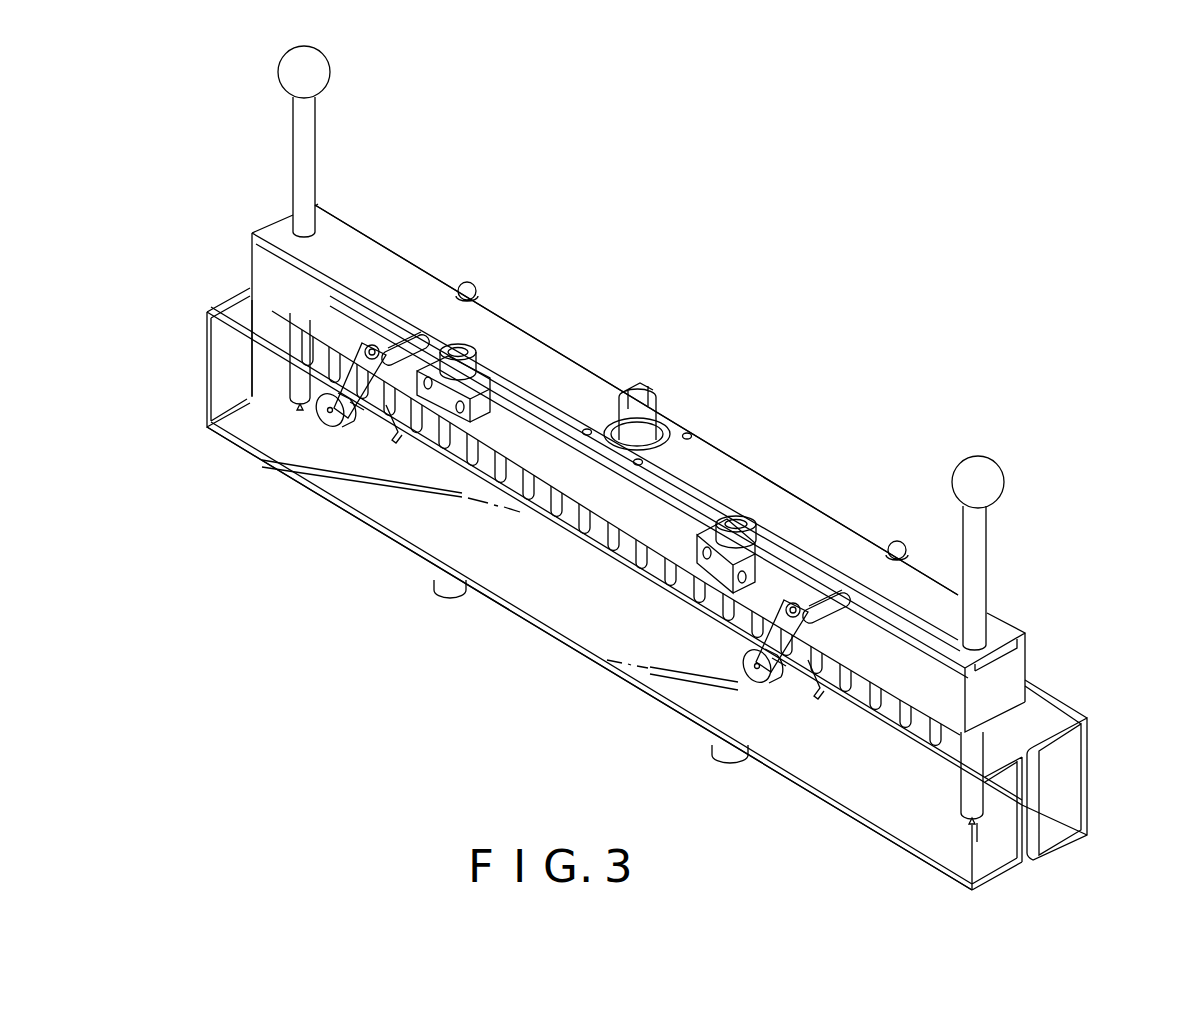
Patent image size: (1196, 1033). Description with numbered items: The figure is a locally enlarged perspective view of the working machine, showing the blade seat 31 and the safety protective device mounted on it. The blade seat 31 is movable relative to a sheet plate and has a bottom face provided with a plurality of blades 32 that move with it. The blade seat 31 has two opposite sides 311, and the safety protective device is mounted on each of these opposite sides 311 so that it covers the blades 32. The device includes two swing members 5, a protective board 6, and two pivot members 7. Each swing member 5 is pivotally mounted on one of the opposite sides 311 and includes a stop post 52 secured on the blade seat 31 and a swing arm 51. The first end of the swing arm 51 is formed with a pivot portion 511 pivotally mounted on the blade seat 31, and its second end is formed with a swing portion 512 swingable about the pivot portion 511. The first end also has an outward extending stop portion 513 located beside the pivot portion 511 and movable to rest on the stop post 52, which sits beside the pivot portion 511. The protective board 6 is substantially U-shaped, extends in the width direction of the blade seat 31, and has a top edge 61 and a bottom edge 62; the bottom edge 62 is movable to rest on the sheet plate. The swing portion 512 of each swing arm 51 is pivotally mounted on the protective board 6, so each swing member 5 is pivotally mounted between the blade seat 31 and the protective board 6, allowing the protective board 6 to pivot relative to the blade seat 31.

The swing member 5 is at (383, 318).
The swing arm 51 is at (368, 395).
The pivot portion 511 is at (366, 345).
The swing portion 512 is at (362, 405).
The stop portion 513 is at (398, 422).
The stop post 52 is at (412, 343).
The protective board 6 is at (262, 460).
The top edge 61 is at (286, 300).
The bottom edge 62 is at (532, 632).
The pivot member 7 is at (312, 422).
The blade seat 31 is at (713, 470).
The opposite side 311 is at (545, 433).
The blade 32 is at (606, 540).